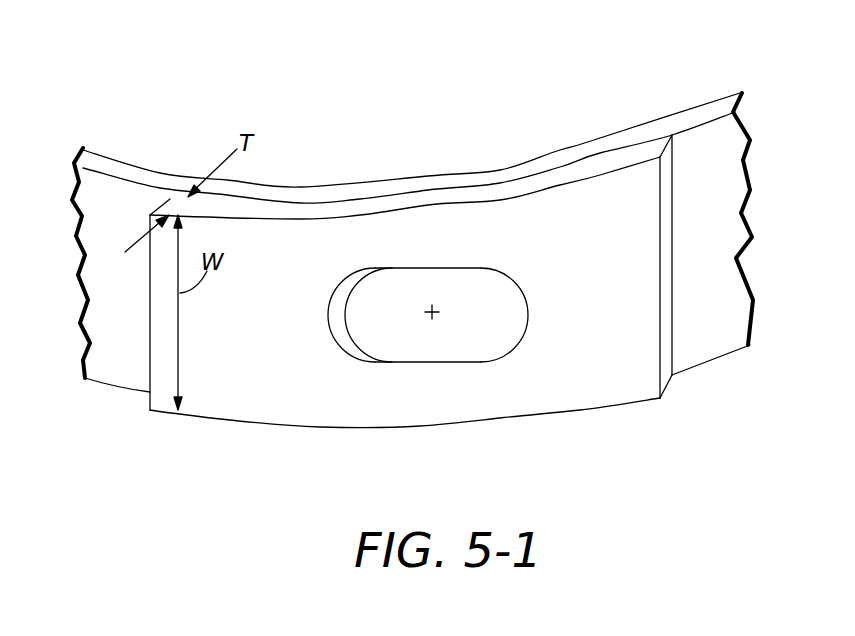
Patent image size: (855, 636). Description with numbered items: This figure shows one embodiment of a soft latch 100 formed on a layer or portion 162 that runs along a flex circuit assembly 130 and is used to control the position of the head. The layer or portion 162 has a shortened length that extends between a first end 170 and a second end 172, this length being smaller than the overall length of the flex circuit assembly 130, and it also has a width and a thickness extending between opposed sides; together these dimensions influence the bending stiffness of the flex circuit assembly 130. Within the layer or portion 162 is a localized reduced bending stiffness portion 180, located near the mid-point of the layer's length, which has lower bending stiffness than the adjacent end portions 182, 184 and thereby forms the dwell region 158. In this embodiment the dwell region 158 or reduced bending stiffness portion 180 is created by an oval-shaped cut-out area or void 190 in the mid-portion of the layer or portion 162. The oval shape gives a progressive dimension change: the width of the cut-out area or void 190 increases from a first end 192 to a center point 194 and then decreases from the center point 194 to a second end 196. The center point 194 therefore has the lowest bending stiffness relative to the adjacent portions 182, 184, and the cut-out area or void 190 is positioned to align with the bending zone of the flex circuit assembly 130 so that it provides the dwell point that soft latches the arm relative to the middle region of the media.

The soft latch 100 is at (412, 232).
The flex circuit assembly 130 is at (433, 174).
The dwell region 158 is at (512, 249).
The layer or portion 162 is at (324, 209).
The first end 170 is at (150, 277).
The second end 172 is at (672, 252).
The reduced bending stiffness portion 180 is at (396, 404).
The adjacent end portion 182 is at (197, 365).
The adjacent end portion 184 is at (580, 355).
The cut-out area or void 190 is at (526, 270).
The first end of cut-out 192 is at (328, 313).
The center point of cut-out 194 is at (434, 305).
The second end of cut-out 196 is at (528, 313).